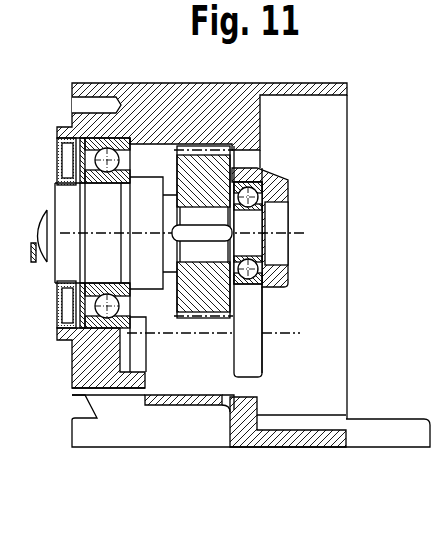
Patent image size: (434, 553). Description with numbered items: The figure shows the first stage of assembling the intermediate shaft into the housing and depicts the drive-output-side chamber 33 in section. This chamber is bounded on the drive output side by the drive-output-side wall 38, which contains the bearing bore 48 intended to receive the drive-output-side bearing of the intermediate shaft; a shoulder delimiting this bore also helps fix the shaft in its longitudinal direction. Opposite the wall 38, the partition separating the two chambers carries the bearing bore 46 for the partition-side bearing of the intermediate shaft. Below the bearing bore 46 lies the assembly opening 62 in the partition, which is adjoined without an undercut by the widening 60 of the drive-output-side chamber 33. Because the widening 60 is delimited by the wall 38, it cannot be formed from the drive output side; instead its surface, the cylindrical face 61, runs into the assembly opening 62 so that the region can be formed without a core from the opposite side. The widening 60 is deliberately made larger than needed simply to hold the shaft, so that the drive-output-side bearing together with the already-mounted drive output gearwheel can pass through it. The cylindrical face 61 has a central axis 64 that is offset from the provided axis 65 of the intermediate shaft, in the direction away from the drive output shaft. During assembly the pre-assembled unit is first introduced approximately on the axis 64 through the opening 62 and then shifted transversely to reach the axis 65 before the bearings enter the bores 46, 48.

The drive-output-side chamber 33 is at (146, 157).
The drive-output-side wall 38 is at (107, 372).
The bearing bore 46 is at (248, 312).
The bearing bore 48 is at (142, 353).
The widening 60 is at (185, 372).
The cylindrical face 61 is at (215, 383).
The assembly opening 62 is at (245, 384).
The central axis 64 is at (270, 358).
The axis of the intermediate shaft 65 is at (280, 333).